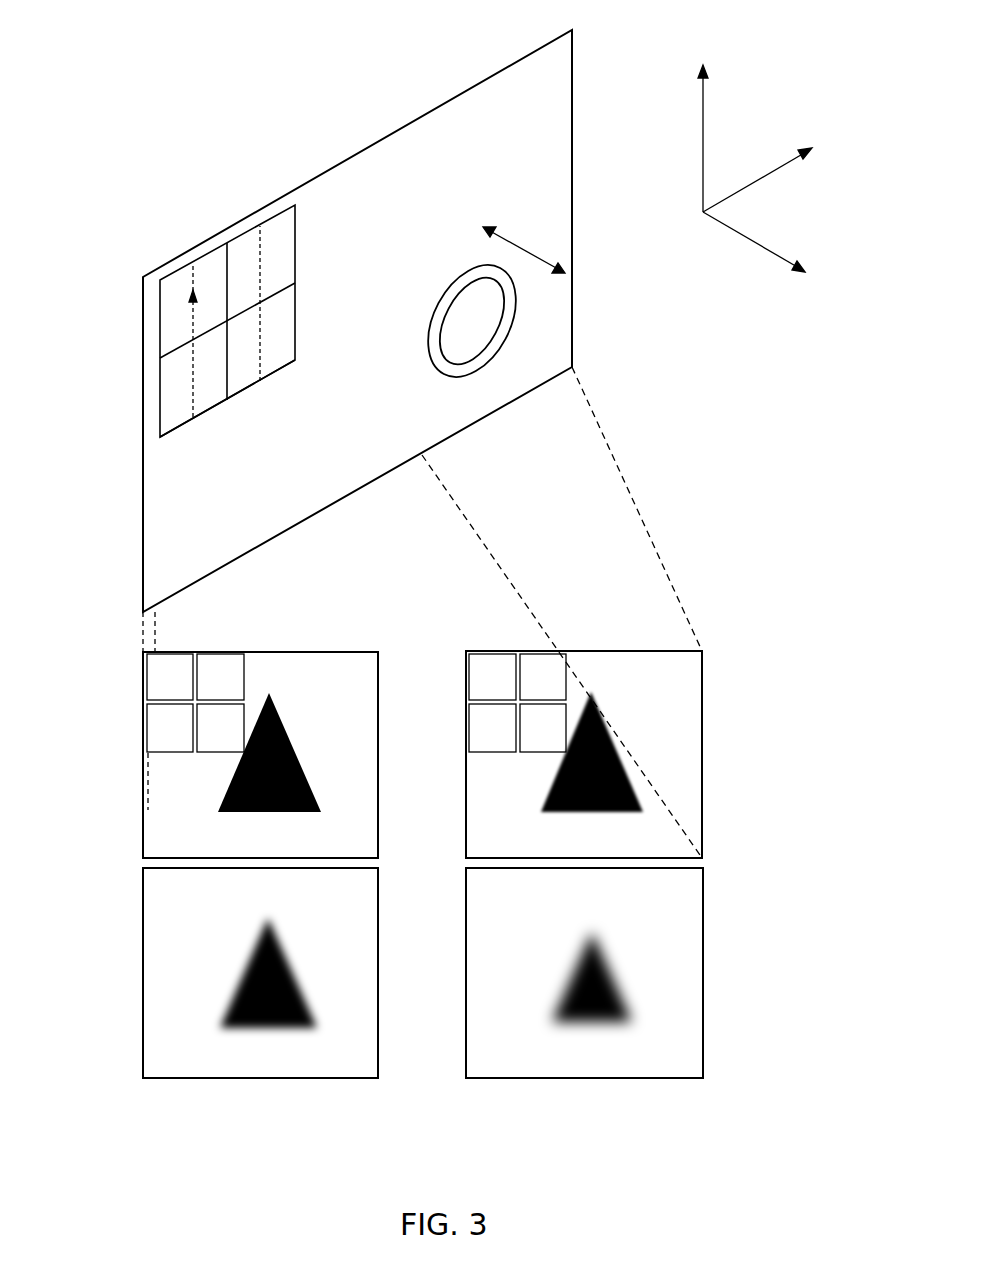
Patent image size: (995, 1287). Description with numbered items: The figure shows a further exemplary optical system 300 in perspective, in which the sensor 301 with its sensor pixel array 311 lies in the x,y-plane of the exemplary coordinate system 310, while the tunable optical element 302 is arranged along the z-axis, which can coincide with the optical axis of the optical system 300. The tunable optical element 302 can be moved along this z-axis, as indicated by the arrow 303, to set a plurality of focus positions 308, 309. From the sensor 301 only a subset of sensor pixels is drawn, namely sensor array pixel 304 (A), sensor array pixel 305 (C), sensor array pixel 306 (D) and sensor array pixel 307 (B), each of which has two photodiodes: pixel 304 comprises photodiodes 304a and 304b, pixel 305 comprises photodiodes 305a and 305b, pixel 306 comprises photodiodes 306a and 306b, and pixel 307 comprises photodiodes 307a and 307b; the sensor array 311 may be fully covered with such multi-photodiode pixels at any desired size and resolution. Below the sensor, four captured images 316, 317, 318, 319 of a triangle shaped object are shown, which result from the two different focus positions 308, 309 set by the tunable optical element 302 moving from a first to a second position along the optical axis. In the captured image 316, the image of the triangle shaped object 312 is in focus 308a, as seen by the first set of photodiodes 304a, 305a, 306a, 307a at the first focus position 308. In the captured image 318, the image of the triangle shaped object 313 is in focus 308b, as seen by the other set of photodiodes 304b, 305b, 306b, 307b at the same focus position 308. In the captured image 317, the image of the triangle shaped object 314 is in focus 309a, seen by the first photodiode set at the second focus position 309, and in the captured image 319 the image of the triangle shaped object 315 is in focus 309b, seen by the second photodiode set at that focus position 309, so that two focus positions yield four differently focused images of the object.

The optical system 300 is at (401, 306).
The sensor 301 is at (488, 92).
The sensor pixel array 311 is at (357, 311).
The tunable optical element 302 is at (485, 330).
The arrow 303 is at (521, 243).
The sensor array pixel A 304 is at (163, 302).
The sensor array pixel C 305 is at (167, 398).
The sensor array pixel D 306 is at (278, 368).
The sensor array pixel B 307 is at (225, 316).
The coordinate system 310 is at (710, 234).
The photodiode A1 304a is at (150, 680).
The photodiode C1 305a is at (150, 727).
The photodiode D1 306a is at (213, 753).
The photodiode B1 307a is at (162, 703).
The focus of first photodiode set at first focus position 308a is at (157, 815).
The captured image 316 is at (223, 731).
The image of triangle shaped object 312 is at (293, 750).
The photodiode A2 304b is at (473, 680).
The photodiode C2 305b is at (473, 727).
The photodiode D2 306b is at (535, 747).
The photodiode B2 307b is at (478, 703).
The focus of second photodiode set at first focus position 308b is at (478, 815).
The captured image 318 is at (546, 730).
The image of triangle shaped object 313 is at (620, 753).
The first focus position 308 is at (435, 730).
The second focus position 309 is at (435, 973).
The focus of first photodiode set at second focus position 309a is at (157, 1030).
The captured image 317 is at (223, 973).
The image of triangle shaped object 314 is at (295, 972).
The focus of second photodiode set at second focus position 309b is at (478, 1030).
The captured image 319 is at (546, 973).
The image of triangle shaped object 315 is at (618, 972).